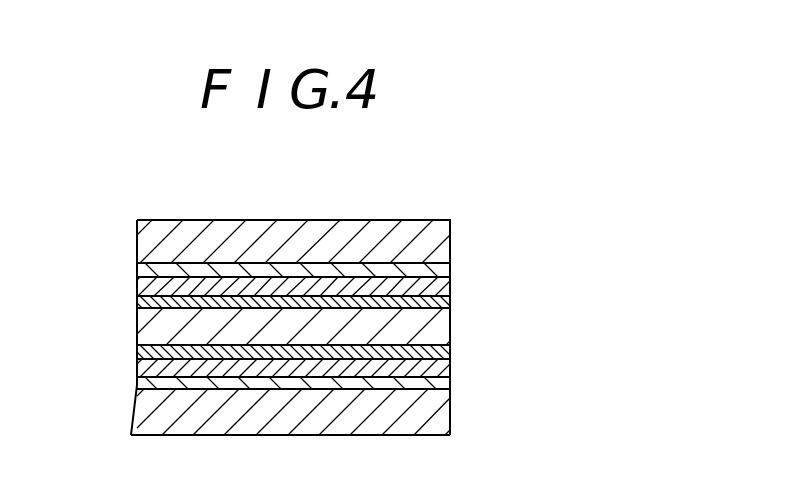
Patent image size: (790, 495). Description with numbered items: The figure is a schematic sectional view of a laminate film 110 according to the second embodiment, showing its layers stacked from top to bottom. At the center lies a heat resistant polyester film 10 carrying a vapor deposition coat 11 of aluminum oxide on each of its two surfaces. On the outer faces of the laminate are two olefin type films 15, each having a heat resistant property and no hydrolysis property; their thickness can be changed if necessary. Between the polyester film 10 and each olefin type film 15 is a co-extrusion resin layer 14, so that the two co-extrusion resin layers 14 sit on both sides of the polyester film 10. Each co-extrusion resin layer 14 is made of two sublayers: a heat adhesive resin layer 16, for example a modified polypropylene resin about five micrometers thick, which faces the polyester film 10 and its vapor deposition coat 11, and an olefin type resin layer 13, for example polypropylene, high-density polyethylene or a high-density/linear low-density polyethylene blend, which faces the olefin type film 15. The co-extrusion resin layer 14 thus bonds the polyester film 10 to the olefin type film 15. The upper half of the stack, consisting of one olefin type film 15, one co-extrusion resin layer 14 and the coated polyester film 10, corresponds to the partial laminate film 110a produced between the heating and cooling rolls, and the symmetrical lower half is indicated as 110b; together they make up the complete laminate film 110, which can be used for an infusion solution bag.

The laminate film 110 is at (401, 208).
The partial laminate film 110a is at (627, 217).
The lower medium half 110b is at (628, 348).
The olefin type film 15 is at (445, 244).
The co-extrusion resin layer 14 is at (545, 275).
The olefin type resin layer 13 is at (445, 270).
The heat adhesive resin layer 16 is at (445, 292).
The vapor deposition coat 11 is at (137, 303).
The polyester film 10 is at (140, 330).